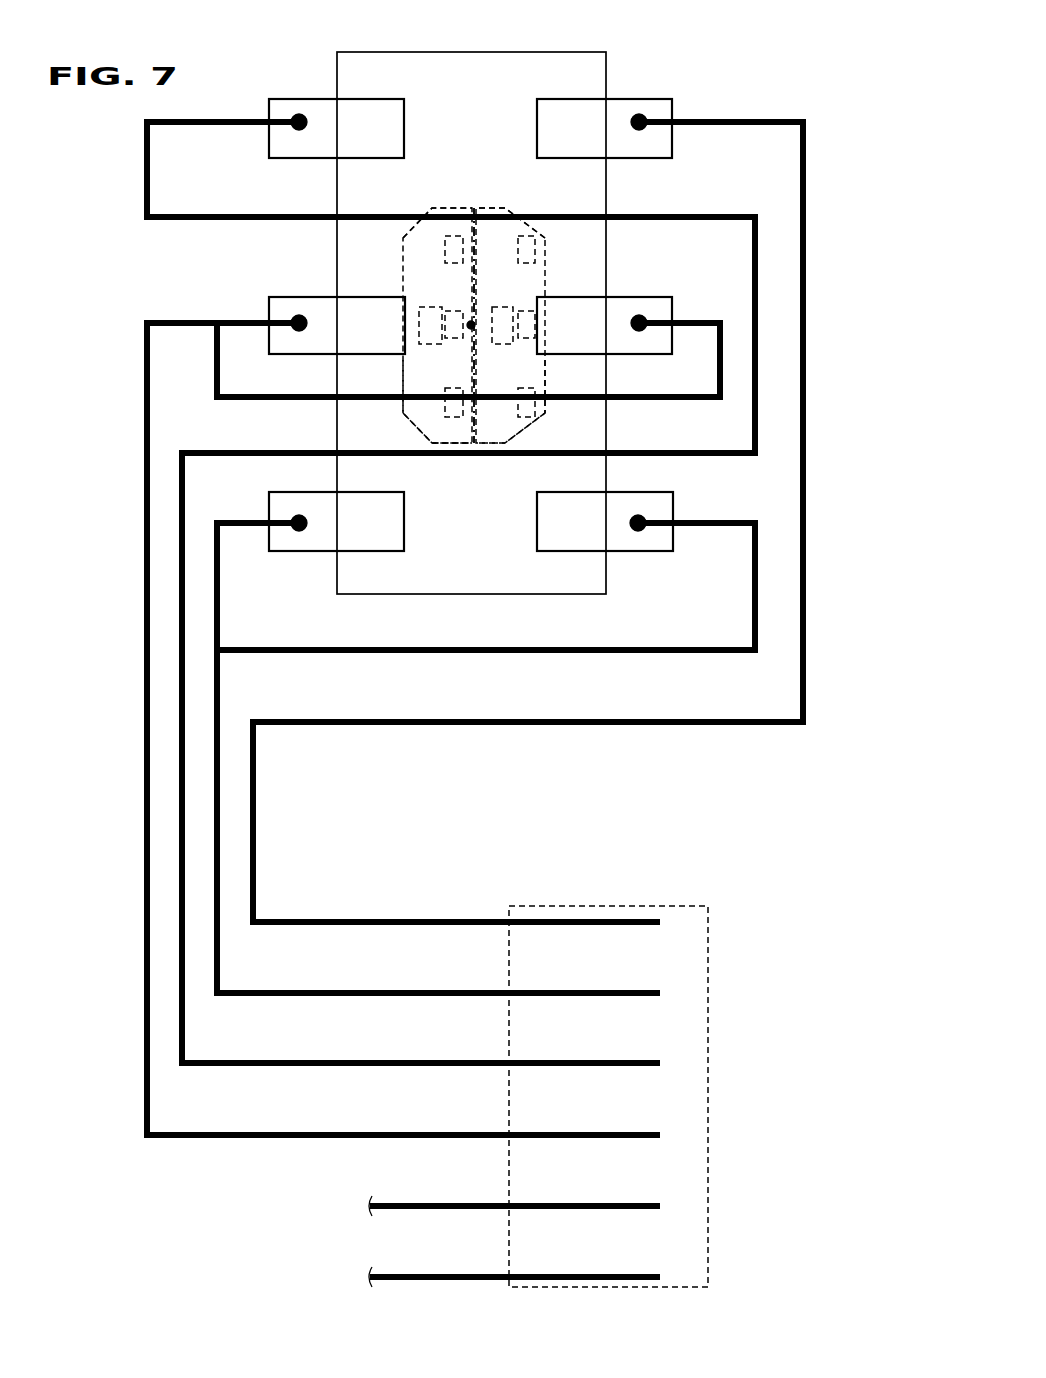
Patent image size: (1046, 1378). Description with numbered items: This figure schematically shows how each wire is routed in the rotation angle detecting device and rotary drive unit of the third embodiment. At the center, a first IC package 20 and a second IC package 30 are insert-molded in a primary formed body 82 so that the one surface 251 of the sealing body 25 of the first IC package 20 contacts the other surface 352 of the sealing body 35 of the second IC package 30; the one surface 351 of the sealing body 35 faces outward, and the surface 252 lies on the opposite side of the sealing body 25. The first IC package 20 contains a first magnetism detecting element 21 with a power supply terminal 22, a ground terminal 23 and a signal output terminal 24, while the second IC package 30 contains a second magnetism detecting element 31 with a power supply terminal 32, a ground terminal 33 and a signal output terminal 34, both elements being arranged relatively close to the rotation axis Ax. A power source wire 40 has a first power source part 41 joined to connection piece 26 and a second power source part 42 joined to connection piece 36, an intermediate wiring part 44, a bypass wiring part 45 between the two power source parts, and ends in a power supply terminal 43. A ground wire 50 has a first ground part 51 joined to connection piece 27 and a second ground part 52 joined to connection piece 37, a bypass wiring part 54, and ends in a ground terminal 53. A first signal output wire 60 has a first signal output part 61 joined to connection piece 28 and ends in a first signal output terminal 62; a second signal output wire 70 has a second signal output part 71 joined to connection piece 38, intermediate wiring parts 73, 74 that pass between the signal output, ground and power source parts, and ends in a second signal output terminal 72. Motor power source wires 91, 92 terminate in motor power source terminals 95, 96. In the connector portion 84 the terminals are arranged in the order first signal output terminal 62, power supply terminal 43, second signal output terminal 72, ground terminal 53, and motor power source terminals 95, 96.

The first IC package 20 is at (545, 262).
The first magnetism detecting element 21 is at (513, 325).
The power supply terminal 22 is at (535, 407).
The ground terminal 23 is at (522, 306).
The signal output terminal 24 is at (535, 248).
The sealing body 25 is at (520, 370).
The connection piece 26 is at (587, 538).
The connection piece 27 is at (601, 345).
The connection piece 28 is at (575, 112).
The second IC package 30 is at (403, 268).
The second magnetism detecting element 31 is at (419, 325).
The power supply terminal 32 is at (445, 407).
The ground terminal 33 is at (452, 311).
The signal output terminal 34 is at (445, 248).
The sealing body 35 is at (420, 368).
The connection piece 36 is at (370, 541).
The connection piece 37 is at (336, 343).
The connection piece 38 is at (355, 120).
The power source wire 40 is at (220, 782).
The first power source part 41 is at (638, 533).
The second power source part 42 is at (298, 533).
The power supply terminal 43 is at (660, 993).
The intermediate wiring part 44 is at (473, 216).
The bypass wiring part 45 is at (487, 655).
The ground wire 50 is at (147, 789).
The first ground part 51 is at (647, 322).
The second ground part 52 is at (291, 322).
The ground terminal 53 is at (660, 1135).
The bypass wiring part 54 is at (469, 402).
The first signal output wire 60 is at (256, 822).
The first signal output part 61 is at (639, 114).
The first signal output terminal 62 is at (660, 922).
The second signal output wire 70 is at (180, 822).
The second signal output part 71 is at (299, 114).
The second signal output terminal 72 is at (660, 1063).
The intermediate wiring part 73 is at (380, 214).
The intermediate wiring part 74 is at (448, 457).
The primary formed body 82 is at (464, 55).
The connector portion 84 is at (612, 905).
The motor power source wire 91 is at (413, 1210).
The motor power source wire 92 is at (455, 1281).
The motor power source terminal 95 is at (660, 1206).
The motor power source terminal 96 is at (660, 1277).
The one surface 251 is at (472, 248).
The inclined portion 252 is at (545, 380).
The one surface 351 is at (403, 380).
The other surface 352 is at (476, 272).
The rotation axis Ax is at (471, 326).